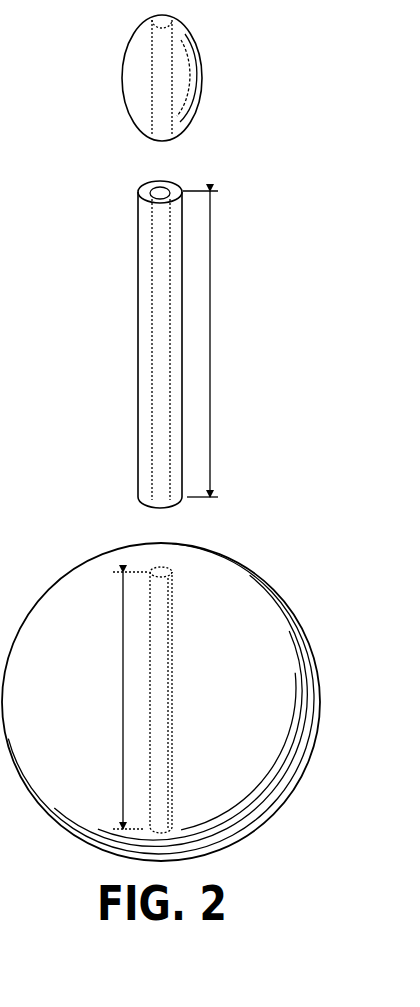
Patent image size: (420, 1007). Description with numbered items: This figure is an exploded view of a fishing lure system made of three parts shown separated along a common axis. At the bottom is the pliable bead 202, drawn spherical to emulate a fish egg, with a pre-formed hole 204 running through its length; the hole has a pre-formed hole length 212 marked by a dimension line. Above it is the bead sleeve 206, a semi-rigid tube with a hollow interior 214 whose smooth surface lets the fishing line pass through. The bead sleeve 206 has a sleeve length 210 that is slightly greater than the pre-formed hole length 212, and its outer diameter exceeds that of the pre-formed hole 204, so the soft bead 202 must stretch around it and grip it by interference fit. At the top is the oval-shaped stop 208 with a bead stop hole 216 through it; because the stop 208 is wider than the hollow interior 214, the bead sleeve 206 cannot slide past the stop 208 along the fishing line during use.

The pliable bead 202 is at (76, 565).
The pre-formed hole 204 is at (173, 704).
The bead sleeve 206 is at (139, 345).
The stop 208 is at (122, 78).
The sleeve length 210 is at (211, 343).
The pre-formed hole length 212 is at (121, 703).
The hollow interior 214 is at (139, 408).
The bead stop hole 216 is at (148, 110).